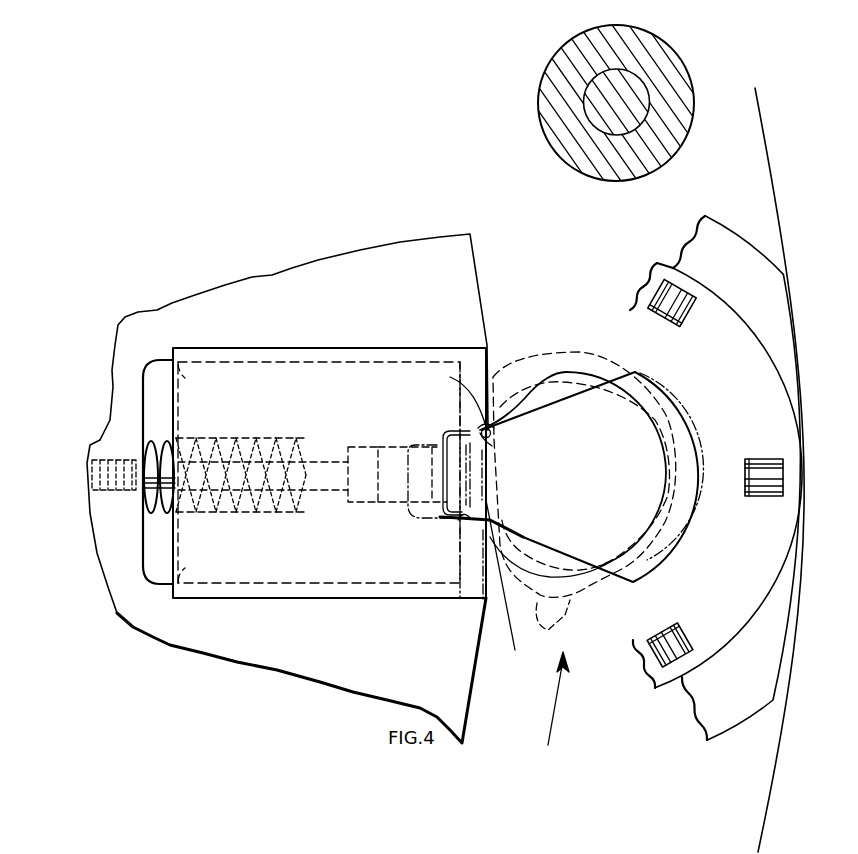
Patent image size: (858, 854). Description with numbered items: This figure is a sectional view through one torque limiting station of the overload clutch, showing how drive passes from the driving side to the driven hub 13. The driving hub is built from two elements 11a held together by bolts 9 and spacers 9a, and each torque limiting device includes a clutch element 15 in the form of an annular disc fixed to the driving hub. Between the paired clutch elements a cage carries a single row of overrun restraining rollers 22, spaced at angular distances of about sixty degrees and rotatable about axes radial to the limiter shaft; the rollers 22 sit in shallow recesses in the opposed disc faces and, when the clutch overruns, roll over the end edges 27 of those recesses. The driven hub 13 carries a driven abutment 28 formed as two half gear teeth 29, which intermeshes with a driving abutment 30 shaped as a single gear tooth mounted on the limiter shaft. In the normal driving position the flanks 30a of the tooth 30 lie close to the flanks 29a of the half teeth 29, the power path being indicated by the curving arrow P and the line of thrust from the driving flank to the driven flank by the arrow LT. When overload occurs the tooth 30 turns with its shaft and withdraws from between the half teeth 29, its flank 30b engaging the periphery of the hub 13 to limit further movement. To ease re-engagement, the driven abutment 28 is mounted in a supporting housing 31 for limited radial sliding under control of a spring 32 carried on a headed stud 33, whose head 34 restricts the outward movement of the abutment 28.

The bolt 9 is at (622, 90).
The spacer 9a is at (680, 98).
The driving hub element 11a is at (773, 181).
The driven hub 13 is at (293, 647).
The clutch element 15 is at (767, 290).
The roller 22 is at (688, 310).
The end edge of recess 27 is at (682, 325).
The driven abutment 28 is at (443, 434).
The half gear tooth 29 is at (457, 425).
The flank of half tooth 29a is at (445, 556).
The driving abutment 30 is at (457, 470).
The flank of driving tooth 30a is at (497, 448).
The flank of driving abutment 30b is at (578, 390).
The supporting housing 31 is at (315, 350).
The spring 32 is at (226, 440).
The headed stud 33 is at (117, 492).
The head of stud 34 is at (368, 447).
The line of thrust arrow LT is at (504, 587).
The power path arrow P is at (558, 703).